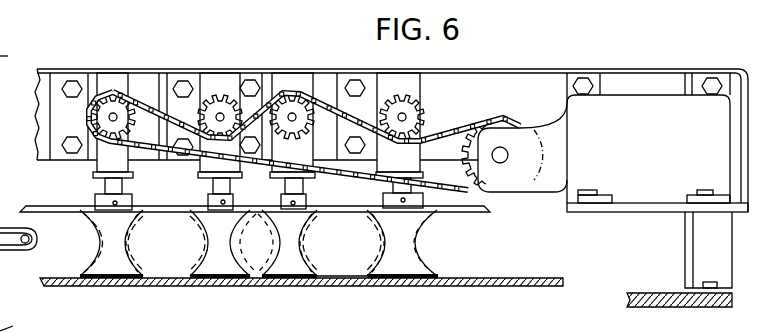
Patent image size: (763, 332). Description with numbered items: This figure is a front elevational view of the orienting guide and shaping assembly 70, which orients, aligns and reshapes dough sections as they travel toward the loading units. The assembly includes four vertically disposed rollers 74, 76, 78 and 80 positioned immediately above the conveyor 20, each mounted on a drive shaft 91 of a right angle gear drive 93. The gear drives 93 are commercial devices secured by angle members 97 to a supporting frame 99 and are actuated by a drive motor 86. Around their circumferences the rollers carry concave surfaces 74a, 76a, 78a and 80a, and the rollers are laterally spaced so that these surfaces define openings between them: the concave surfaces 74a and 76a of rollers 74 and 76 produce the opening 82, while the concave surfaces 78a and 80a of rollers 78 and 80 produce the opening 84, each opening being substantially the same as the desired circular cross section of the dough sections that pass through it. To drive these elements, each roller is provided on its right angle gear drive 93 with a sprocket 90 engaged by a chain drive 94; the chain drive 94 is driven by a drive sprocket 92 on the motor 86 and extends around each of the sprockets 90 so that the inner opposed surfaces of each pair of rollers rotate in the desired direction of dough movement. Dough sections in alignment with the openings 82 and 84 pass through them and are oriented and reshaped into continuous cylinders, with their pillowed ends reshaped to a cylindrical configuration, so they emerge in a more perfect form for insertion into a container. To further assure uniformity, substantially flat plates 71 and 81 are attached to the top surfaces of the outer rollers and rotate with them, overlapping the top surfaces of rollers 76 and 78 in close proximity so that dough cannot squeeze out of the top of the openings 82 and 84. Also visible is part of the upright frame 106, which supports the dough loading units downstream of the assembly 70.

The orienting guide and shaping assembly 70 is at (523, 68).
The supporting frame 99 is at (470, 82).
The angle members 97 is at (99, 80).
The right angle gear drives 93 is at (148, 171).
The drive shafts 91 is at (123, 188).
The sprocket 90 is at (200, 110).
The drive sprocket 92 is at (478, 167).
The chain drive 94 is at (470, 123).
The drive motor 86 is at (663, 155).
The flat plate 81 is at (474, 208).
The flat plate 71 is at (64, 211).
The roller 74 is at (115, 274).
The concave surface 74a is at (137, 257).
The roller 76 is at (222, 274).
The concave surface 76a is at (233, 243).
The roller 78 is at (300, 274).
The concave surface 78a is at (316, 253).
The roller 80 is at (400, 274).
The concave surface 80a is at (412, 262).
The opening 82 is at (180, 248).
The opening 84 is at (355, 248).
The conveyor 20 is at (366, 283).
The upright frame 106 is at (23, 322).